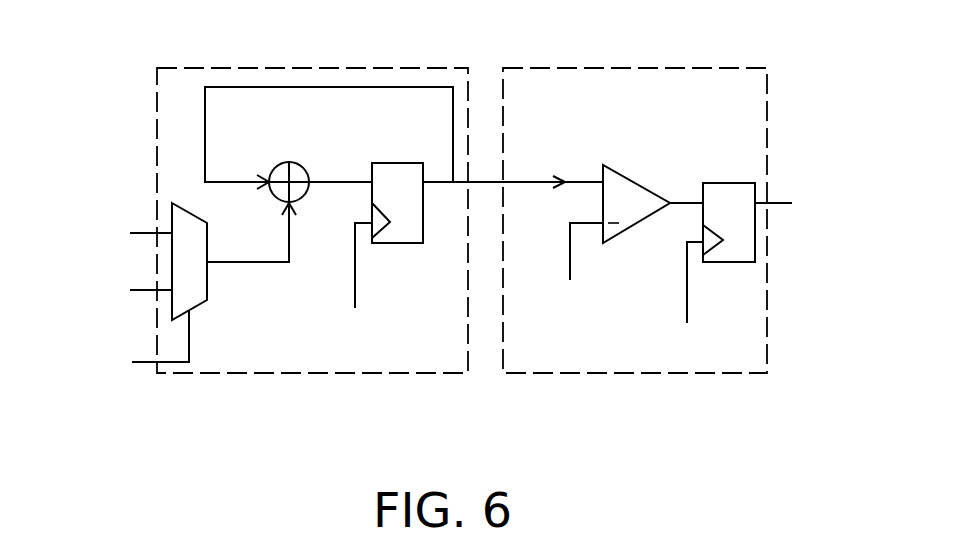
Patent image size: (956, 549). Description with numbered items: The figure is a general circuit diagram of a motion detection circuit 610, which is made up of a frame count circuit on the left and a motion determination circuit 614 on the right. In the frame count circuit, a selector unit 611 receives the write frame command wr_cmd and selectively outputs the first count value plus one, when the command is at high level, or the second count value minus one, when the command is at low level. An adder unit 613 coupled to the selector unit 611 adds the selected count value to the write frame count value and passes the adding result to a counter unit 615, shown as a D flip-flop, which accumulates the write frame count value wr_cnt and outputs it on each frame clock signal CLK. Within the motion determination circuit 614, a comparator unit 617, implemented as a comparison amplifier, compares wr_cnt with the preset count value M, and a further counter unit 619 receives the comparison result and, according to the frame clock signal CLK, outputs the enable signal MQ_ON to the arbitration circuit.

The write counter circuit 610 is at (882, 411).
The selector unit 611 is at (200, 304).
The adder unit 613 is at (303, 168).
The motion determination circuit 614 is at (679, 68).
The counter unit 615 is at (333, 68).
The comparator unit 617 is at (641, 185).
The counter unit 619 is at (728, 183).